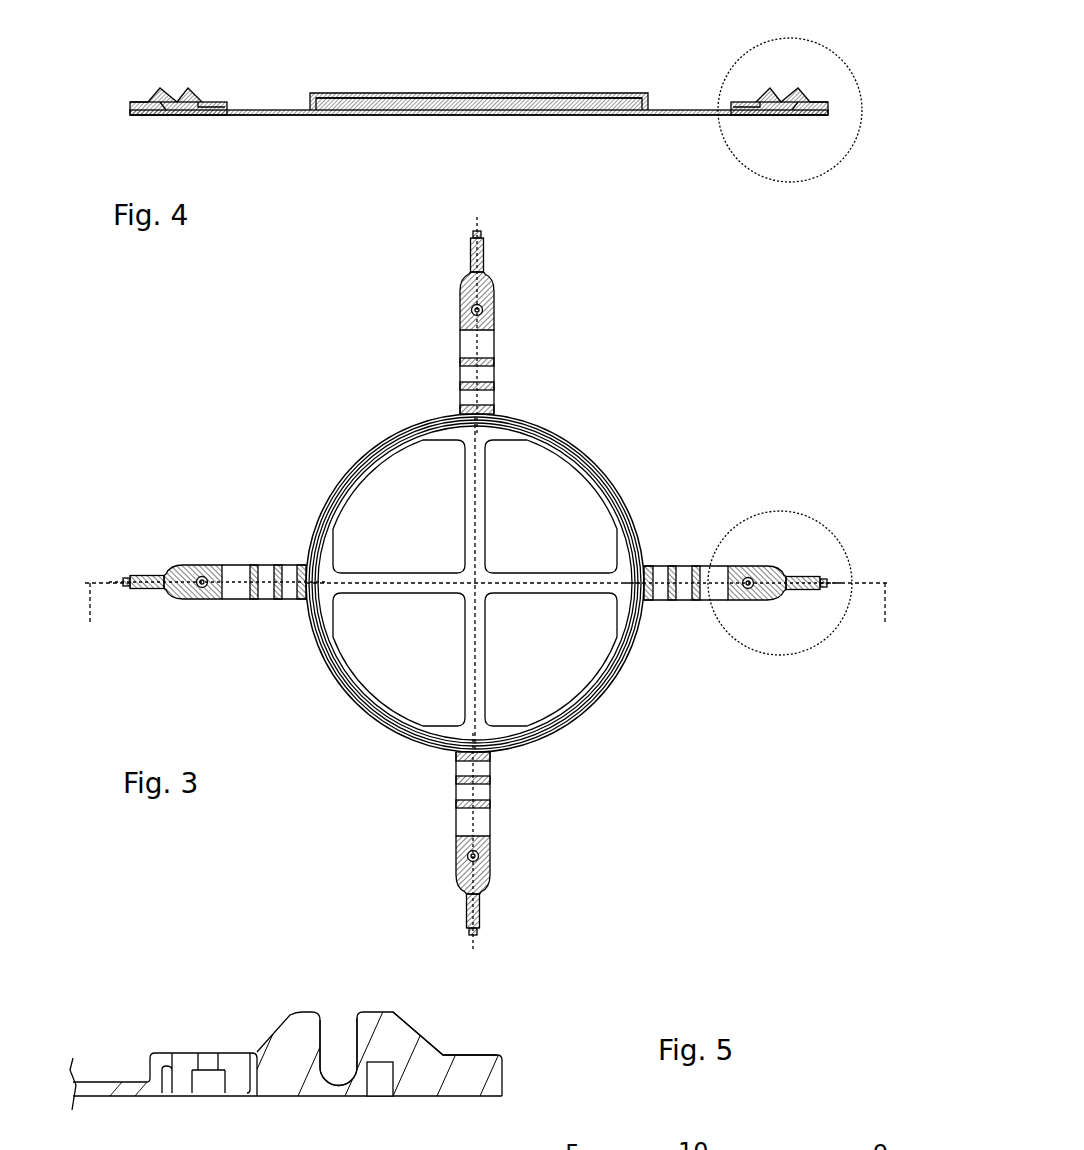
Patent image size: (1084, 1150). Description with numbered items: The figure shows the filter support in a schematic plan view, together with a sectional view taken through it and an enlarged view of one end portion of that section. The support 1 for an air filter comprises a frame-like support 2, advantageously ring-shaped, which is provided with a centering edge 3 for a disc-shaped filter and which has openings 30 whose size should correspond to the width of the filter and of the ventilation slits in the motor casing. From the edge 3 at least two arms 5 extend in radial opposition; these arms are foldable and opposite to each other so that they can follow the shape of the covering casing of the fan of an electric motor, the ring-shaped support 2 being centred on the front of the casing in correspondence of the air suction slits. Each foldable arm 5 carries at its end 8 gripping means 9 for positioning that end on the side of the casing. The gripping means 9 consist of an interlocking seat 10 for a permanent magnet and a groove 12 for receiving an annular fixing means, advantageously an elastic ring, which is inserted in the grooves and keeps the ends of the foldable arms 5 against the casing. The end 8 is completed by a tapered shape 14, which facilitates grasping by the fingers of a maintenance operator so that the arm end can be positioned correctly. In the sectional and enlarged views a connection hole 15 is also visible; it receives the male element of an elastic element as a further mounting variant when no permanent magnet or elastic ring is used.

In FIG. 4, the support 1 is at (350, 84).
In FIG. 3, the support 1 is at (288, 495).
In FIG. 4, the frame-like support 2 is at (580, 93).
In FIG. 3, the frame-like support 2 is at (585, 470).
In FIG. 4, the centering edge 3 is at (540, 115).
In FIG. 3, the centering edge 3 is at (565, 425).
In FIG. 4, the arms 5 is at (252, 115).
In FIG. 3, the arms 5 is at (467, 347).
In FIG. 5, the arms 5 is at (100, 1080).
In FIG. 4, the end 8 is at (182, 115).
In FIG. 3, the end 8 is at (490, 290).
In FIG. 5, the end 8 is at (270, 1097).
In FIG. 4, the gripping means 9 is at (168, 86).
In FIG. 3, the gripping means 9 is at (502, 306).
In FIG. 5, the gripping means 9 is at (215, 1021).
In FIG. 4, the interlocking seat 10 is at (215, 103).
In FIG. 3, the interlocking seat 10 is at (470, 310).
In FIG. 5, the interlocking seat 10 is at (182, 1085).
In FIG. 4, the groove 12 is at (178, 99).
In FIG. 3, the groove 12 is at (474, 280).
In FIG. 5, the groove 12 is at (352, 1065).
In FIG. 4, the tapered shape 14 is at (148, 99).
In FIG. 3, the tapered shape 14 is at (483, 240).
In FIG. 5, the tapered shape 14 is at (458, 1055).
In FIG. 4, the connection hole 15 is at (166, 112).
In FIG. 5, the connection hole 15 is at (380, 1080).
In FIG. 4, the openings 30 is at (524, 92).
In FIG. 3, the openings 30 is at (408, 503).